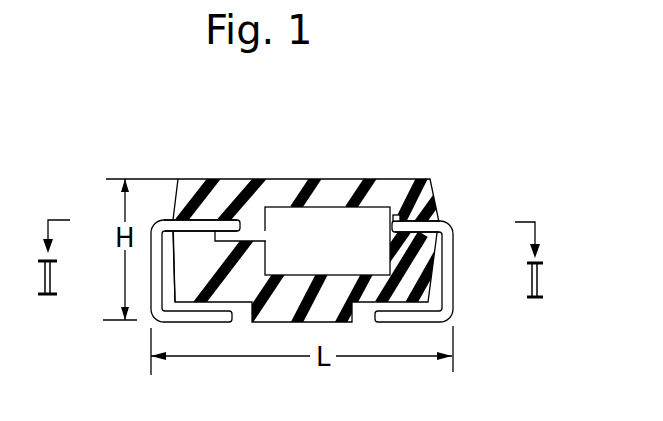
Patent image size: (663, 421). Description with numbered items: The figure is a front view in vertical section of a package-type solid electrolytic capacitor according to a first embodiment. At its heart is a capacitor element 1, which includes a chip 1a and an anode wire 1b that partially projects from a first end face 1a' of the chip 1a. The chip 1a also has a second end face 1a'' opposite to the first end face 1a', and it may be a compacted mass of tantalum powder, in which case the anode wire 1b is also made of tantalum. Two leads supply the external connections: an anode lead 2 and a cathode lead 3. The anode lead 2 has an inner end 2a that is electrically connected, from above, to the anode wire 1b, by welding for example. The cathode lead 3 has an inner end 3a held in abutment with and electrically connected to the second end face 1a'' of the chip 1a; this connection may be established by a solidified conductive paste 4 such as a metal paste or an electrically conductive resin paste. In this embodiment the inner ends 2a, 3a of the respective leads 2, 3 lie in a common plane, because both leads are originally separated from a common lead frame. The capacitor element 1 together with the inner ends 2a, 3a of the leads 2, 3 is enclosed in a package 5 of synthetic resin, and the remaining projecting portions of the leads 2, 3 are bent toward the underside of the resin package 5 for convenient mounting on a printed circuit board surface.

The capacitor element 1 is at (327, 183).
The chip 1a is at (327, 184).
The first end face 1a' is at (228, 147).
The second end face 1a'' is at (458, 295).
The anode wire 1b is at (230, 231).
The anode lead 2 is at (151, 313).
The inner end 2a is at (176, 186).
The cathode lead 3 is at (457, 250).
The inner end 3a is at (433, 221).
The solidified conductive paste 4 is at (418, 226).
The package 5 is at (222, 218).